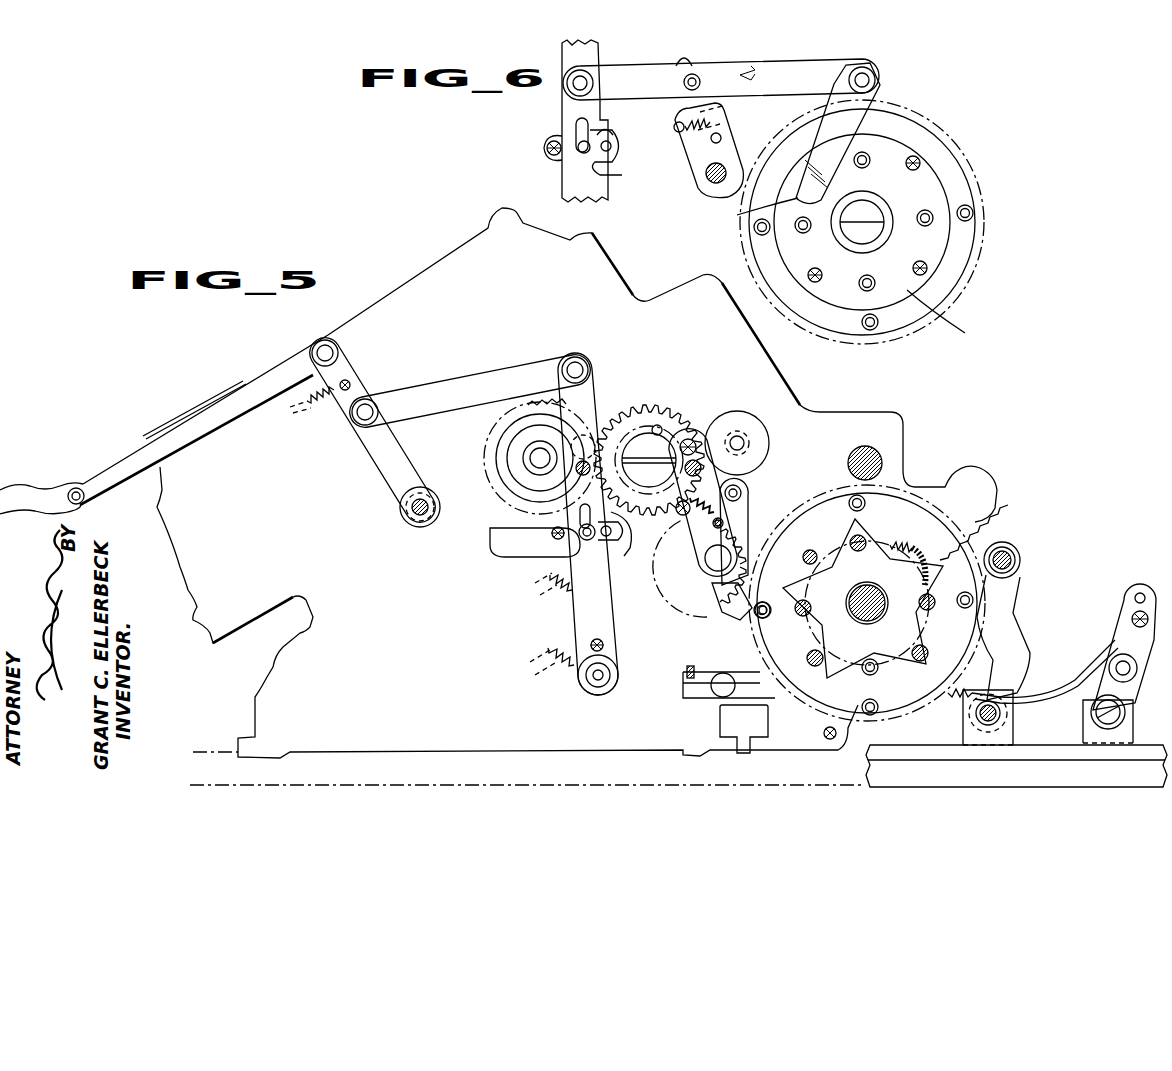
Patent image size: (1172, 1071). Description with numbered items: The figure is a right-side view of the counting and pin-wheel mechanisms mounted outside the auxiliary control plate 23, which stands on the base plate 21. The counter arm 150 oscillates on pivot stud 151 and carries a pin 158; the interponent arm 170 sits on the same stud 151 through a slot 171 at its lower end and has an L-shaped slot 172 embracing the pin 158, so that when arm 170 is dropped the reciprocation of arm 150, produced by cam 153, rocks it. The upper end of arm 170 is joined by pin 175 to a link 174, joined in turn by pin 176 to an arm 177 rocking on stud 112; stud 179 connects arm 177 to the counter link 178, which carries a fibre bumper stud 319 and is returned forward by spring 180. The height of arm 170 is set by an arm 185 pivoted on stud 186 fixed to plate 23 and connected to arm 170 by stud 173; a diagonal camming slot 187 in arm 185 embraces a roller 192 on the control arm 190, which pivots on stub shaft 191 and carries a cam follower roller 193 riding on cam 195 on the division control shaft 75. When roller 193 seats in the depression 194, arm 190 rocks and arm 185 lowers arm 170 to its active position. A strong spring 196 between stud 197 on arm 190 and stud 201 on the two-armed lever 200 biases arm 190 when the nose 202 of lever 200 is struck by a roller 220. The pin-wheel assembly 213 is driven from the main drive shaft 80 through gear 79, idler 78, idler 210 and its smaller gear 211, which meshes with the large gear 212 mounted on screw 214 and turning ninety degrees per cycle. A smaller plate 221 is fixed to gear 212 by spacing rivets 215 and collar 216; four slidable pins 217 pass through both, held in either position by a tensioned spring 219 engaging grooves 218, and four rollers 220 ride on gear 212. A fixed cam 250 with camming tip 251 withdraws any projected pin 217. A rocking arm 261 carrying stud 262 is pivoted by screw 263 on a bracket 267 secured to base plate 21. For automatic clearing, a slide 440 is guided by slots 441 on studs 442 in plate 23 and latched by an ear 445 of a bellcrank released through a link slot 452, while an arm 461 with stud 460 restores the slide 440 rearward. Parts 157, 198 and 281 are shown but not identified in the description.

In FIG. 5, the base plate 21 is at (1134, 786).
In FIG. 5, the auxiliary control plate 23 is at (897, 430).
In FIG. 5, the division control shaft 75 is at (745, 443).
In FIG. 5, the idler 78 is at (627, 541).
In FIG. 5, the gear 79 is at (487, 436).
In FIG. 5, the main drive shaft 80 is at (530, 458).
In FIG. 5, the stud 112 is at (418, 518).
In FIG. 6, the counter arm 150 is at (578, 120).
In FIG. 5, the counter arm 150 is at (578, 563).
In FIG. 5, the pivot stud 151 is at (597, 685).
In FIG. 5, the cam 153 is at (508, 473).
In FIG. 6, the spring 157 is at (548, 148).
In FIG. 5, the spring 157 is at (508, 578).
In FIG. 6, the pin 158 is at (612, 175).
In FIG. 5, the pin 158 is at (597, 537).
In FIG. 6, the interponent arm 170 is at (575, 178).
In FIG. 5, the interponent arm 170 is at (612, 608).
In FIG. 5, the slot 171 is at (590, 646).
In FIG. 6, the L-shaped slot 172 is at (606, 140).
In FIG. 5, the L-shaped slot 172 is at (580, 518).
In FIG. 6, the stud 173 is at (585, 78).
In FIG. 5, the stud 173 is at (577, 473).
In FIG. 5, the link 174 is at (470, 380).
In FIG. 5, the pin 175 is at (580, 363).
In FIG. 5, the pin 176 is at (368, 400).
In FIG. 5, the arm 177 is at (375, 472).
In FIG. 5, the counter link 178 is at (205, 413).
In FIG. 5, the stud 179 is at (326, 340).
In FIG. 5, the spring 180 is at (304, 413).
In FIG. 6, the arm 185 is at (738, 70).
In FIG. 6, the stud 186 is at (866, 72).
In FIG. 5, the stud 186 is at (866, 456).
In FIG. 6, the diagonal camming slot 187 is at (694, 62).
In FIG. 6, the control arm 190 is at (690, 150).
In FIG. 5, the control arm 190 is at (722, 480).
In FIG. 6, the stub shaft 191 is at (708, 181).
In FIG. 5, the stub shaft 191 is at (731, 557).
In FIG. 6, the roller 192 is at (684, 82).
In FIG. 5, the roller 192 is at (702, 468).
In FIG. 5, the cam follower roller 193 is at (672, 404).
In FIG. 5, the depression 194 is at (690, 438).
In FIG. 5, the cam 195 is at (745, 412).
In FIG. 6, the spring 196 is at (712, 118).
In FIG. 5, the spring 196 is at (717, 528).
In FIG. 5, the stud 197 is at (676, 508).
In FIG. 6, the pawl carrier 198 is at (721, 138).
In FIG. 5, the pawl carrier 198 is at (750, 505).
In FIG. 5, the two-armed lever 200 is at (750, 530).
In FIG. 5, the stud 201 is at (742, 490).
In FIG. 5, the nose 202 is at (740, 625).
In FIG. 5, the idler 210 is at (690, 600).
In FIG. 5, the gear 211 is at (688, 578).
In FIG. 6, the large gear 212 is at (975, 270).
In FIG. 5, the large gear 212 is at (947, 513).
In FIG. 6, the pin-wheel assembly 213 is at (990, 165).
In FIG. 5, the pin-wheel assembly 213 is at (822, 474).
In FIG. 6, the screw 214 is at (870, 215).
In FIG. 5, the screw 214 is at (858, 615).
In FIG. 6, the spacing rivets 215 is at (915, 163).
In FIG. 5, the spacing rivets 215 is at (922, 660).
In FIG. 5, the collar 216 is at (877, 615).
In FIG. 6, the slidable pins 217 is at (930, 222).
In FIG. 5, the slidable pins 217 is at (920, 600).
In FIG. 5, the grooves 218 is at (852, 537).
In FIG. 5, the tensioned spring 219 is at (922, 542).
In FIG. 6, the rollers 220 is at (970, 212).
In FIG. 5, the rollers 220 is at (872, 717).
In FIG. 6, the plate 221 is at (945, 316).
In FIG. 5, the plate 221 is at (994, 523).
In FIG. 6, the fixed cam 250 is at (845, 135).
In FIG. 6, the camming tip 251 is at (748, 214).
In FIG. 5, the rocking arm 261 is at (1012, 615).
In FIG. 5, the stud 262 is at (1003, 553).
In FIG. 5, the screw 263 is at (990, 722).
In FIG. 5, the bracket 267 is at (1006, 728).
In FIG. 5, the bracket 281 is at (490, 545).
In FIG. 5, the fibre bumper stud 319 is at (77, 488).
In FIG. 5, the slide 440 is at (1076, 672).
In FIG. 5, the slots 441 is at (748, 688).
In FIG. 5, the studs 442 is at (723, 688).
In FIG. 5, the ear 445 is at (686, 672).
In FIG. 5, the slot 452 is at (1140, 594).
In FIG. 5, the stud 460 is at (1137, 617).
In FIG. 5, the arm 461 is at (1125, 635).